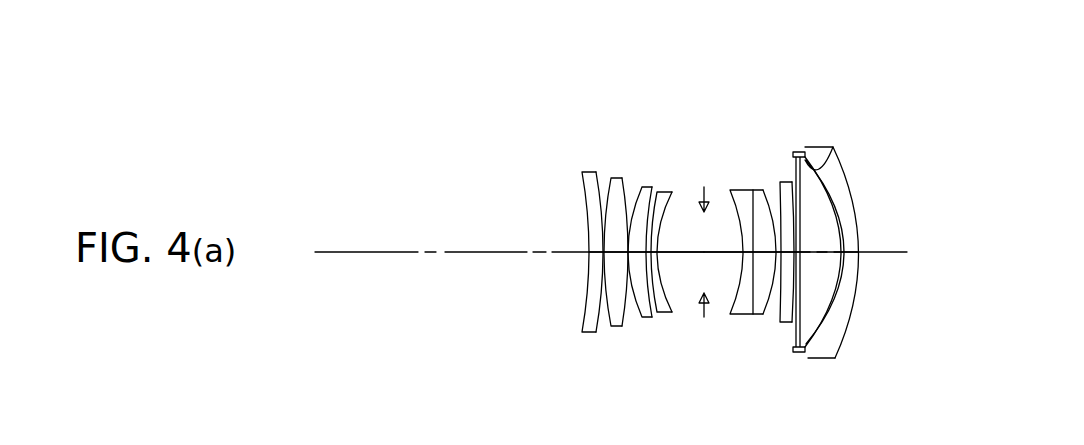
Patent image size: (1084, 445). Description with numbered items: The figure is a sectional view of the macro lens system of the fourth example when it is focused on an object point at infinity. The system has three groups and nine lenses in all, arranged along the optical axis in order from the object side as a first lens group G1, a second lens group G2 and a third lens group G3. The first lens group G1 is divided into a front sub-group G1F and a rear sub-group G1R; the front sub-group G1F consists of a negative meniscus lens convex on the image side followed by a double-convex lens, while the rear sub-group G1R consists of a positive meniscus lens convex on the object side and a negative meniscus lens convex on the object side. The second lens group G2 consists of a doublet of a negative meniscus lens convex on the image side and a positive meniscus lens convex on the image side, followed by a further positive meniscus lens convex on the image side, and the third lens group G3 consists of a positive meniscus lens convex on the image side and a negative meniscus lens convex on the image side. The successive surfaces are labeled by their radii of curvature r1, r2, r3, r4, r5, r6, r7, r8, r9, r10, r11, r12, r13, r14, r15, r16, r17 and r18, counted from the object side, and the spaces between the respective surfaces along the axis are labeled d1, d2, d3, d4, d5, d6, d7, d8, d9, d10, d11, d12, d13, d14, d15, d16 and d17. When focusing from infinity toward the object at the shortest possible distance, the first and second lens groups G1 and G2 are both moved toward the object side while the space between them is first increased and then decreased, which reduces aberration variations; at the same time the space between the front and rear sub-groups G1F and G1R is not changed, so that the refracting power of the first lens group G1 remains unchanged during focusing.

The first lens group G1 is at (675, 65).
The front sub-group of the first lens group G1F is at (622, 110).
The rear sub-group of the first lens group G1R is at (677, 110).
The second lens group G2 is at (790, 68).
The third lens group G3 is at (847, 68).
The radius of curvature r1 is at (582, 172).
The radius of curvature r2 is at (594, 171).
The radius of curvature r3 is at (611, 177).
The radius of curvature r4 is at (620, 177).
The radius of curvature r5 is at (642, 186).
The radius of curvature r6 is at (652, 188).
The radius of curvature r7 is at (658, 191).
The radius of curvature r8 is at (672, 192).
The radius of curvature r9 is at (706, 227).
The radius of curvature r10 is at (731, 190).
The radius of curvature r11 is at (753, 190).
The radius of curvature r12 is at (763, 190).
The radius of curvature r13 is at (780, 182).
The radius of curvature r14 is at (792, 182).
The radius of curvature r15 is at (797, 152).
The radius of curvature r16 is at (806, 156).
The radius of curvature r17 is at (833, 147).
The radius of curvature r18 is at (852, 174).
The space between lens surfaces d1 is at (590, 272).
The space between lens surfaces d2 is at (603, 284).
The space between lens surfaces d3 is at (614, 328).
The space between lens surfaces d4 is at (628, 282).
The space between lens surfaces d5 is at (640, 318).
The space between lens surfaces d6 is at (650, 314).
The space between lens surfaces d7 is at (660, 308).
The space between lens surfaces d8 is at (662, 258).
The space between lens surfaces d9 is at (740, 262).
The space between lens surfaces d10 is at (733, 300).
The space between lens surfaces d11 is at (758, 310).
The space between lens surfaces d12 is at (778, 300).
The space between lens surfaces d13 is at (788, 318).
The space between lens surfaces d14 is at (796, 325).
The space between lens surfaces d15 is at (799, 256).
The space between lens surfaces d16 is at (840, 284).
The space between lens surfaces d17 is at (852, 274).